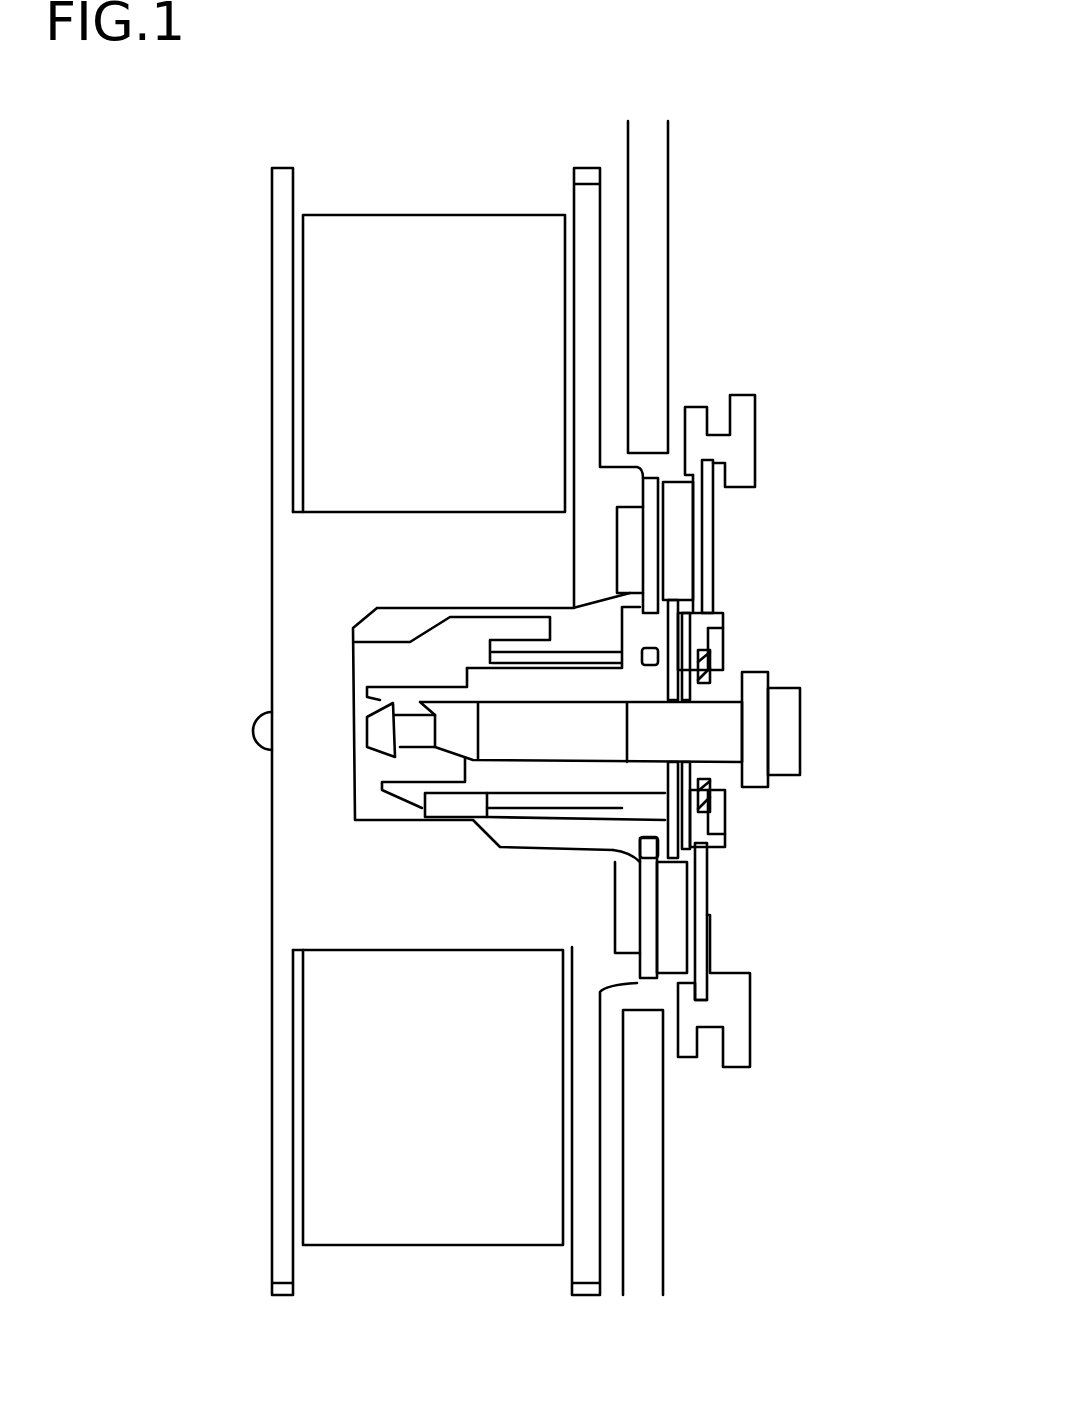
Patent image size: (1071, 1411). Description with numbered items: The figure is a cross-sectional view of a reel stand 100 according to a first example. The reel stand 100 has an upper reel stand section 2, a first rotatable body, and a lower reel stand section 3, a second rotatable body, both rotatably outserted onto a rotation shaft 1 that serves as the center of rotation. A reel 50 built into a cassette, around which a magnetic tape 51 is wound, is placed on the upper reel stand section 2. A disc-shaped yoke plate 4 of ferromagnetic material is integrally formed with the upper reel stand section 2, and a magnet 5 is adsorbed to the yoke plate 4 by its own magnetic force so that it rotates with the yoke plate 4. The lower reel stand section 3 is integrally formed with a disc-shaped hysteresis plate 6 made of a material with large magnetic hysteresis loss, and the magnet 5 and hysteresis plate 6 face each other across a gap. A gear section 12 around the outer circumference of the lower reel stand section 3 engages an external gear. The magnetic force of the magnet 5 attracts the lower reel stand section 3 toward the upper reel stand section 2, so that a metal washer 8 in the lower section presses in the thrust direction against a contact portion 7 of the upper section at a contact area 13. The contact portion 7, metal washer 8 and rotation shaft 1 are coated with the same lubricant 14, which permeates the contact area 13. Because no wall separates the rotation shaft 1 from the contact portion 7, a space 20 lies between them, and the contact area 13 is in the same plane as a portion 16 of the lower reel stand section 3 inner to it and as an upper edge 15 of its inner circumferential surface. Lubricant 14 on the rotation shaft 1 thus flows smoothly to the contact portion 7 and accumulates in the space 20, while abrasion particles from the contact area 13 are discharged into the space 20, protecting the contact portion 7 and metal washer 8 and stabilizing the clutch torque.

The rotation shaft 1 is at (723, 737).
The upper reel stand section 2 is at (507, 772).
The lower reel stand section 3 is at (737, 1008).
The yoke plate 4 is at (653, 865).
The magnet 5 is at (675, 534).
The hysteresis plate 6 is at (703, 877).
The contact portion 7 is at (703, 618).
The metal washer 8 is at (722, 642).
The gear section 12 is at (744, 408).
The contact area 13 is at (708, 800).
The lubricant 14 is at (580, 763).
The upper edge 15 is at (745, 689).
The portion 16 is at (705, 670).
The space 20 is at (742, 787).
The reel 50 is at (297, 547).
The magnetic tape 51 is at (350, 378).
The reel stand 100 is at (863, 242).